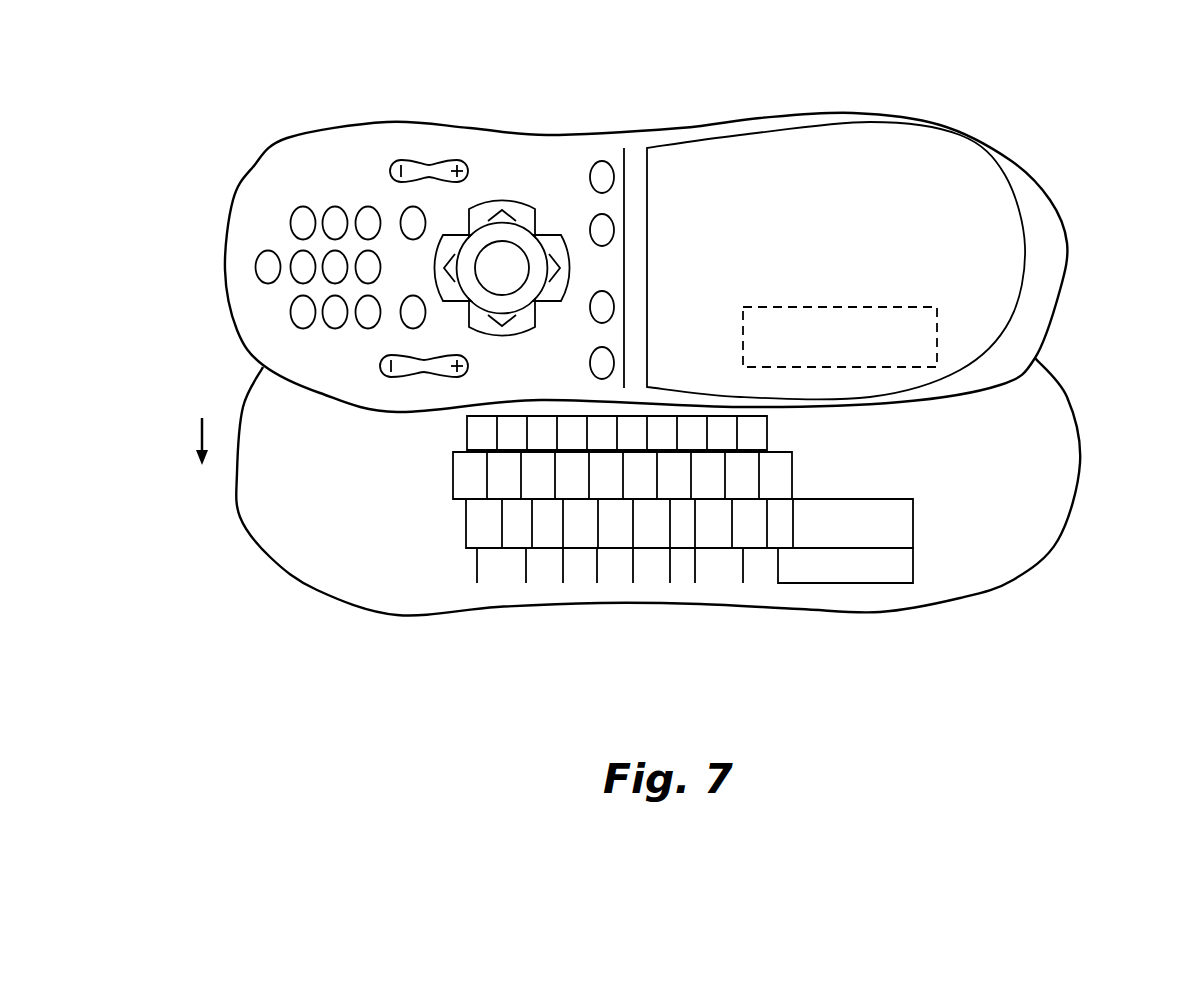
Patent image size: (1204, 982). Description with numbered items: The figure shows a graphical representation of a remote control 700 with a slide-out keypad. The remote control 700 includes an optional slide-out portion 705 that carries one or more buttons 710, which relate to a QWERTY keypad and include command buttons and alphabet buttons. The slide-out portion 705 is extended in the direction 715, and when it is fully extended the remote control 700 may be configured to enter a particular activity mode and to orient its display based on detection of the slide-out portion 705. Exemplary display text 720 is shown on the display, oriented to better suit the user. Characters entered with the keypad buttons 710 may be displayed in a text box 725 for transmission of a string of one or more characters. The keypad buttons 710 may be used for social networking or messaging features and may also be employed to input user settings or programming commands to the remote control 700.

The remote control 700 is at (862, 113).
The slide-out portion 705 is at (1077, 410).
The buttons 710 is at (548, 586).
The direction 715 is at (175, 441).
The display text 720 is at (962, 247).
The text box 725 is at (937, 345).